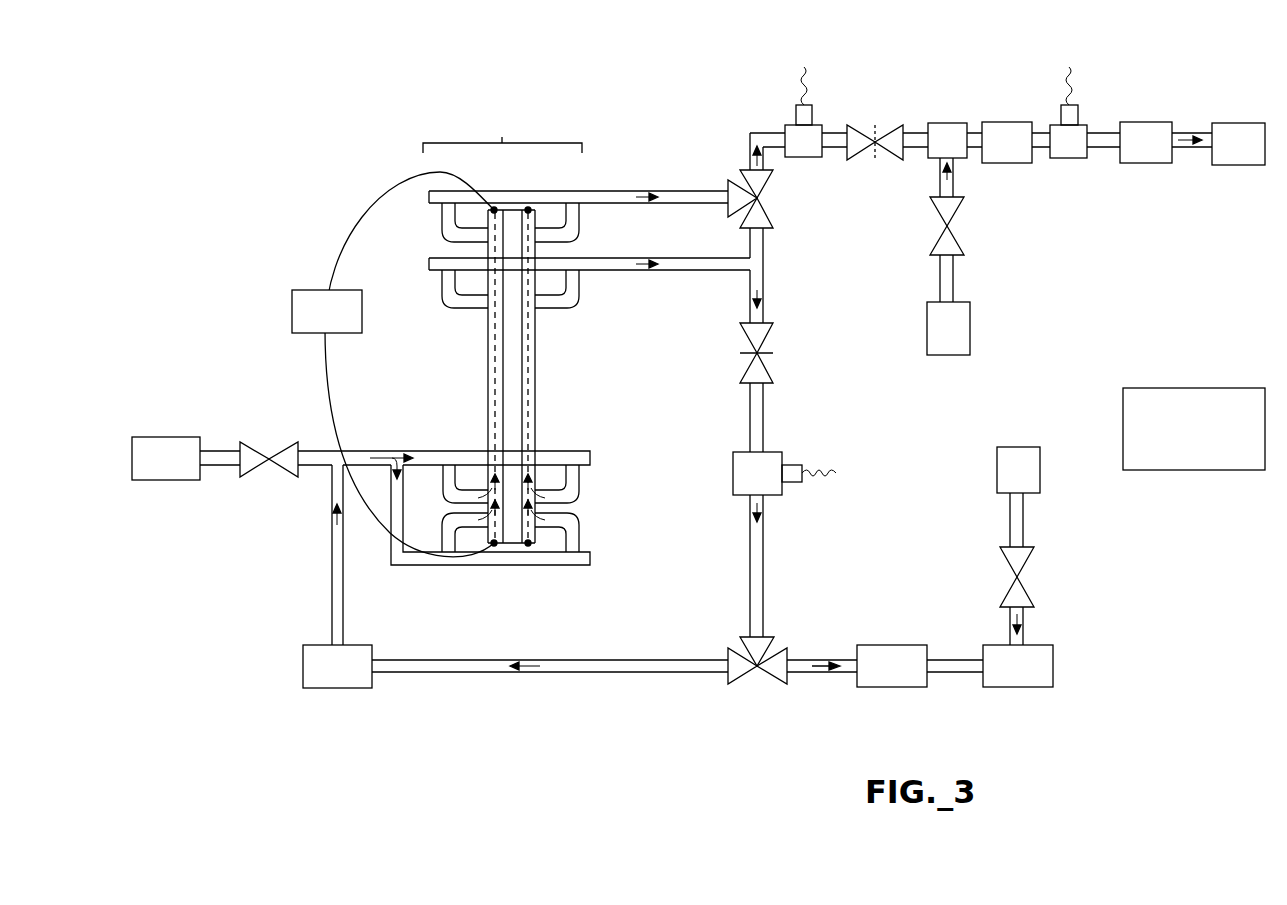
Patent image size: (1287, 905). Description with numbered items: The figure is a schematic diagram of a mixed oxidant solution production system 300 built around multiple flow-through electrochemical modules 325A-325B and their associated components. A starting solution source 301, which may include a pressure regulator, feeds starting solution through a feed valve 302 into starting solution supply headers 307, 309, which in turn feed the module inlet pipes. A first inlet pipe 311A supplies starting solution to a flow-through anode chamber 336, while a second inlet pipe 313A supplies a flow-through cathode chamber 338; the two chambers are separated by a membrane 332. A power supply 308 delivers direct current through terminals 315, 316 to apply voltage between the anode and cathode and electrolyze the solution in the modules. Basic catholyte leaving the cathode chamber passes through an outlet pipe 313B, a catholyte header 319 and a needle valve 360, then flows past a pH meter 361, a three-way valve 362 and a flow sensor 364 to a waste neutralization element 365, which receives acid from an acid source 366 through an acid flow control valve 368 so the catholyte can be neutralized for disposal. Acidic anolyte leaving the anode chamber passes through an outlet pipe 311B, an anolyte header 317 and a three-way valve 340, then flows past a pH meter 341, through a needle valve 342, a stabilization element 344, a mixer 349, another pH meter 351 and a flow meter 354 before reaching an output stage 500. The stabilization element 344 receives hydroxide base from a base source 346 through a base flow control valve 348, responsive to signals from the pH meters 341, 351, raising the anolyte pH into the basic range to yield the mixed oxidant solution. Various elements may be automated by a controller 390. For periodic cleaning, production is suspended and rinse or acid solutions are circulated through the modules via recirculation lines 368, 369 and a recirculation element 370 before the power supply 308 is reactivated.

The mixed oxidant solution production system 300 is at (222, 122).
The starting solution source 301 is at (162, 481).
The feed valve 302 is at (272, 470).
The starting solution supply header 307 is at (414, 566).
The power supply 308 is at (303, 335).
The starting solution supply header 309 is at (434, 450).
The first inlet pipe 311A is at (583, 535).
The anolyte outlet pipe 311B is at (583, 215).
The second inlet pipe 313A is at (583, 484).
The catholyte outlet pipe 313B is at (583, 282).
The terminal 315 is at (520, 546).
The terminal 316 is at (506, 208).
The anolyte header 317 is at (700, 189).
The catholyte header 319 is at (703, 272).
The flow-through electrochemical modules 325A-325B is at (502, 132).
The membrane 332 is at (528, 385).
The flow-through anode chamber 336 is at (521, 346).
The flow-through cathode chamber 338 is at (533, 410).
The three-way valve 340 is at (776, 226).
The pH meter 341 is at (788, 126).
The needle valve 342 is at (895, 126).
The stabilization element 344 is at (949, 123).
The base source 346 is at (970, 318).
The base flow control valve 348 is at (962, 248).
The mixer 349 is at (1014, 123).
The pH meter 351 is at (1087, 125).
The flow meter 354 is at (1153, 122).
The needle valve 360 is at (778, 375).
The pH meter 361 is at (792, 496).
The three-way valve 362 is at (768, 673).
The flow sensor 364 is at (892, 688).
The waste neutralization element 365 is at (1012, 688).
The acid source 366 is at (996, 469).
The acid flow control valve 368 is at (598, 673).
The recirculation line 369 is at (331, 580).
The recirculation element 370 is at (326, 689).
The controller 390 is at (1196, 389).
The output stage 500 is at (1236, 123).